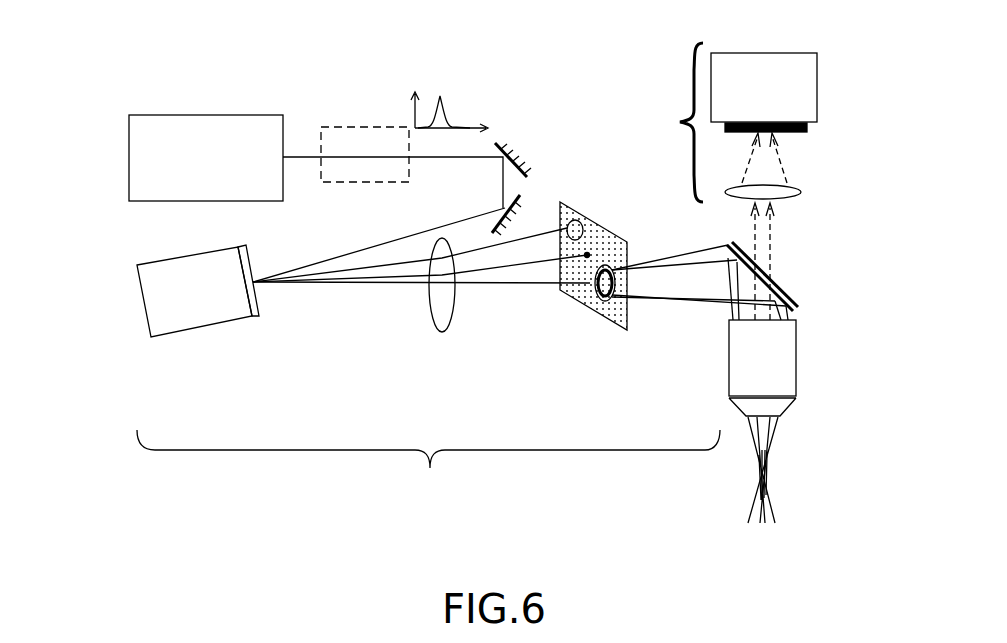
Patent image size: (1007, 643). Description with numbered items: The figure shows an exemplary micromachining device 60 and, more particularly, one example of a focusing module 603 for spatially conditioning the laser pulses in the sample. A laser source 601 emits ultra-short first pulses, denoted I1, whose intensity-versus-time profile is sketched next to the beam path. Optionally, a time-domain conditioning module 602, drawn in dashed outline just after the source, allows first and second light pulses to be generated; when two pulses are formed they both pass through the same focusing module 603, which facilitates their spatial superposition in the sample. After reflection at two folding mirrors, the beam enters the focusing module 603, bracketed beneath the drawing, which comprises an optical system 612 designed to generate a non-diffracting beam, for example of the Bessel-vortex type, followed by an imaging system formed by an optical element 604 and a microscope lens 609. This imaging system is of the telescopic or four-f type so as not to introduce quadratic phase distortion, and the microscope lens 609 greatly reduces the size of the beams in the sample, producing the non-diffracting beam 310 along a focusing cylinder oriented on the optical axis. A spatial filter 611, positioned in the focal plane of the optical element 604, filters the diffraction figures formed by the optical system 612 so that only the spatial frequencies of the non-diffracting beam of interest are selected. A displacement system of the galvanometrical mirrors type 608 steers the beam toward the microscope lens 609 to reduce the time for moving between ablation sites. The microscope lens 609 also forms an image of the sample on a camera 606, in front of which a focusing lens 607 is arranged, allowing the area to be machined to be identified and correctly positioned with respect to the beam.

The micromachining device 60 is at (117, 80).
The laser source 601 is at (200, 113).
The time-domain conditioning module 602 is at (351, 127).
The focusing module 603 is at (430, 468).
The optical element 604 is at (455, 305).
The camera 606 is at (820, 90).
The focusing lens 607 is at (802, 192).
The galvanometrical mirrors system 608 is at (783, 293).
The microscope lens 609 is at (797, 372).
The spatial filter 611 is at (607, 323).
The optical system 612 is at (212, 328).
The non-diffracting beam 310 is at (772, 483).
The ultra-short first pulses I1 is at (453, 110).